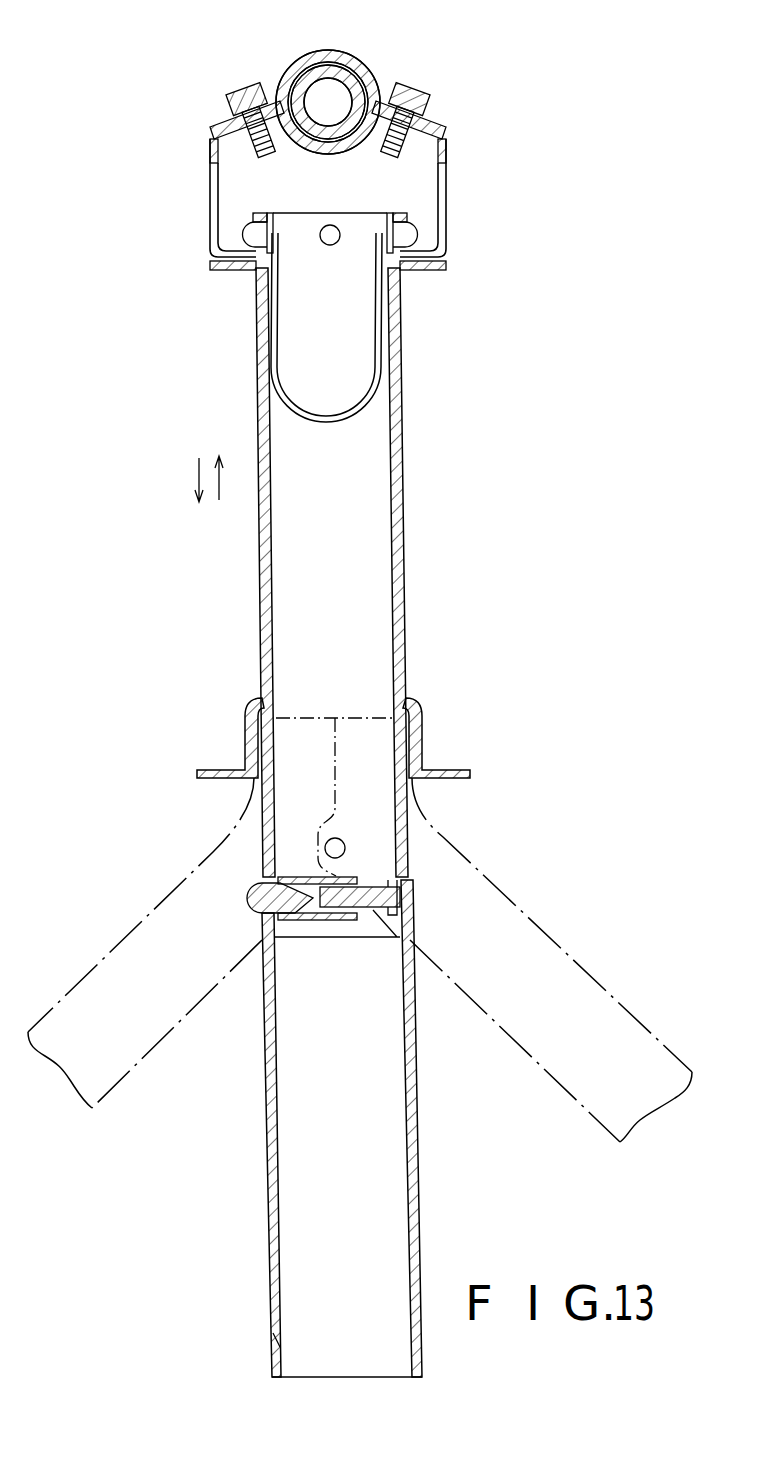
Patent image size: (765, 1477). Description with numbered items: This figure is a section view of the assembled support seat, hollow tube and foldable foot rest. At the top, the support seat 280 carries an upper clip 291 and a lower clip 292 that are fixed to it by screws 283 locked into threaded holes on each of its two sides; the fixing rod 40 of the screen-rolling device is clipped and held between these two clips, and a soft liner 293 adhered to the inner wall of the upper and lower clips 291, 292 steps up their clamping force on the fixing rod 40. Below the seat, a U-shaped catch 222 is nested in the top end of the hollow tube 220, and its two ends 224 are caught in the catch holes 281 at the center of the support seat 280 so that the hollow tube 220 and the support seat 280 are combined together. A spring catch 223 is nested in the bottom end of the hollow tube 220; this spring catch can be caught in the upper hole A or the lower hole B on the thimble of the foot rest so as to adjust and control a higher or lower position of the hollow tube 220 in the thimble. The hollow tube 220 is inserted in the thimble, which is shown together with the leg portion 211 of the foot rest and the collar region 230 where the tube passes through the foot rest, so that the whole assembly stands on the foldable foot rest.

The fixing rod 40 is at (328, 58).
The leg 211 is at (478, 863).
The hollow tube 220 is at (403, 562).
The U-shaped catch 222 is at (368, 408).
The spring catch 223 is at (342, 1128).
The ends of the U-shaped catch 224 is at (405, 235).
The collar 230 is at (418, 722).
The support seat 280 is at (444, 157).
The catch holes 281 is at (253, 222).
The screws 283 is at (407, 95).
The upper clip 291 is at (437, 120).
The lower clip 292 is at (248, 127).
The soft liner 293 is at (247, 97).
The upper hole A is at (263, 915).
The lower hole B is at (278, 1340).